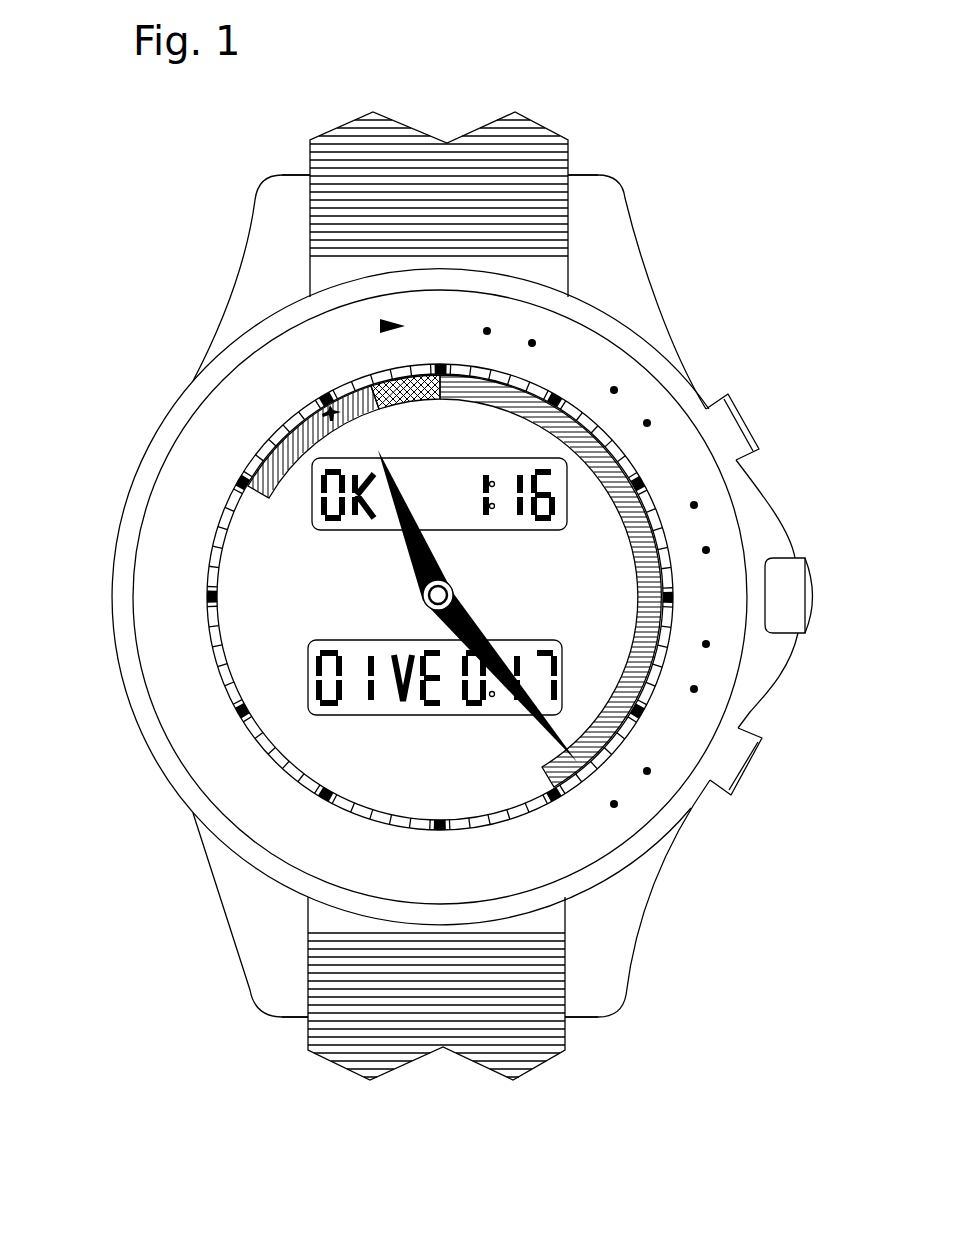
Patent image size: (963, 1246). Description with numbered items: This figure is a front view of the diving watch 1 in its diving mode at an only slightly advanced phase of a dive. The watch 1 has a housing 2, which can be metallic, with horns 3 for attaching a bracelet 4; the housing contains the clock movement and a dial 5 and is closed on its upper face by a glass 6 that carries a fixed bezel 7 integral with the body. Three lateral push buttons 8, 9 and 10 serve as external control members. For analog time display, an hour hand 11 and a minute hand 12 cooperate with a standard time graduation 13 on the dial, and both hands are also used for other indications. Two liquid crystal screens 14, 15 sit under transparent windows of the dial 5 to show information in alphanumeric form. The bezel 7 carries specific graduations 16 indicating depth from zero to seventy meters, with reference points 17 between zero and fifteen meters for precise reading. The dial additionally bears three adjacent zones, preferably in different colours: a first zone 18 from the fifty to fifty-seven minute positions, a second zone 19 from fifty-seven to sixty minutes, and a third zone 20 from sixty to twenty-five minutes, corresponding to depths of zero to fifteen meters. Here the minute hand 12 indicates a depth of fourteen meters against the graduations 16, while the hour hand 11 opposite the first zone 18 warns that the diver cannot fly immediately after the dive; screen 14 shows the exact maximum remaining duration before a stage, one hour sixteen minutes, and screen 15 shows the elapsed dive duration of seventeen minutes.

The diving watch 1 is at (549, 1160).
The housing 2 is at (122, 782).
The horns 3 is at (262, 231).
The bracelet 4 is at (563, 152).
The dial 5 is at (247, 507).
The glass 6 is at (240, 652).
The fixed bezel 7 is at (250, 836).
The push button 8 is at (730, 427).
The push button 9 is at (790, 582).
The push button 10 is at (717, 783).
The hour hand 11 is at (405, 548).
The minute hand 12 is at (548, 756).
The time graduation 13 is at (607, 432).
The liquid crystal screen 14 is at (557, 525).
The liquid crystal screen 15 is at (560, 680).
The specific graduations 16 is at (378, 325).
The reference points 17 is at (705, 642).
The first zone 18 is at (285, 445).
The second zone 19 is at (410, 387).
The third zone 20 is at (473, 382).